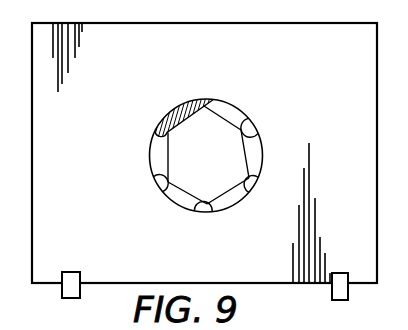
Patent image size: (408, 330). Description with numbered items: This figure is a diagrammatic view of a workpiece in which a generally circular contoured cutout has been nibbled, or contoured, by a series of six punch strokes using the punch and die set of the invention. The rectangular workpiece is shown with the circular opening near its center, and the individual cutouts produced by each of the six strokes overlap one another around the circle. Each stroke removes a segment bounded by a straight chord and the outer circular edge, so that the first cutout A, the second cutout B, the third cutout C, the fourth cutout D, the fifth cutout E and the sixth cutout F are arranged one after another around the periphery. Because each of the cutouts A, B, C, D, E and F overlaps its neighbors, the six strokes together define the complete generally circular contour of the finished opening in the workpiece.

The first punch-stroke cutout A is at (186, 114).
The second punch-stroke cutout B is at (231, 110).
The third punch-stroke cutout C is at (259, 161).
The fourth punch-stroke cutout D is at (221, 205).
The fifth punch-stroke cutout E is at (180, 202).
The sixth punch-stroke cutout F is at (149, 158).